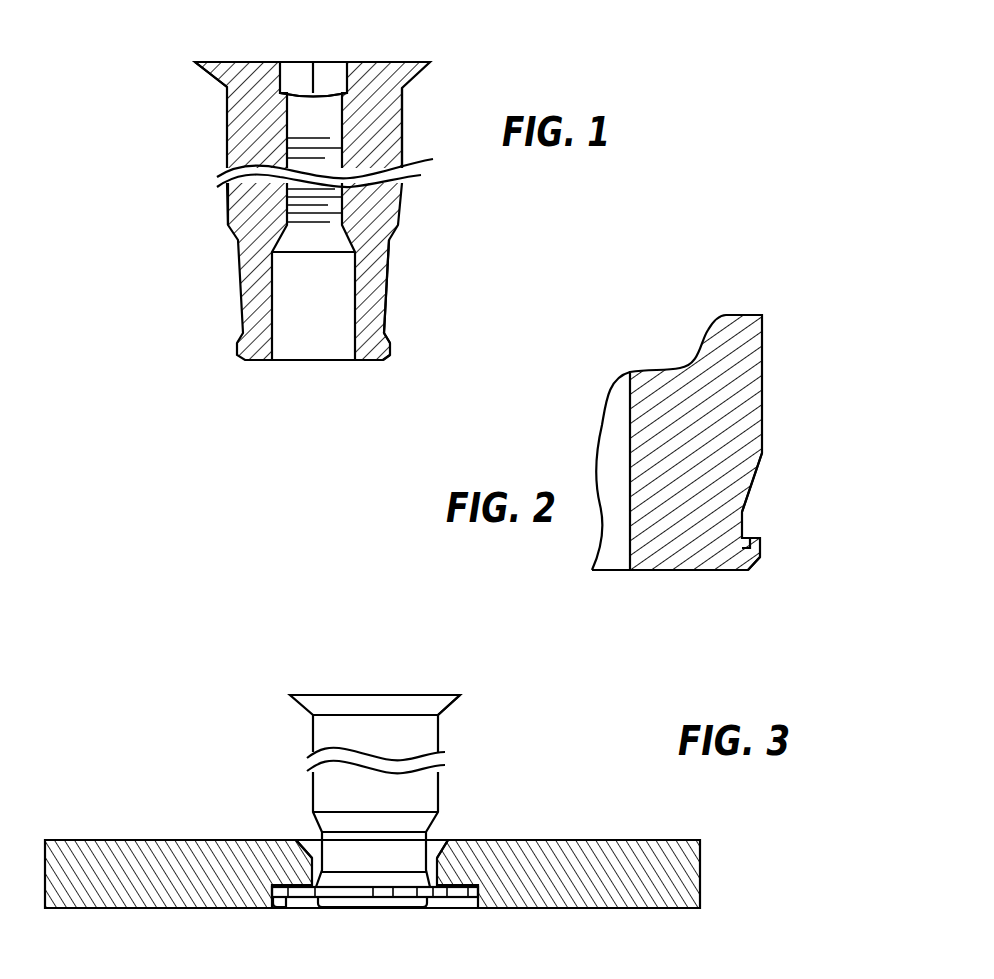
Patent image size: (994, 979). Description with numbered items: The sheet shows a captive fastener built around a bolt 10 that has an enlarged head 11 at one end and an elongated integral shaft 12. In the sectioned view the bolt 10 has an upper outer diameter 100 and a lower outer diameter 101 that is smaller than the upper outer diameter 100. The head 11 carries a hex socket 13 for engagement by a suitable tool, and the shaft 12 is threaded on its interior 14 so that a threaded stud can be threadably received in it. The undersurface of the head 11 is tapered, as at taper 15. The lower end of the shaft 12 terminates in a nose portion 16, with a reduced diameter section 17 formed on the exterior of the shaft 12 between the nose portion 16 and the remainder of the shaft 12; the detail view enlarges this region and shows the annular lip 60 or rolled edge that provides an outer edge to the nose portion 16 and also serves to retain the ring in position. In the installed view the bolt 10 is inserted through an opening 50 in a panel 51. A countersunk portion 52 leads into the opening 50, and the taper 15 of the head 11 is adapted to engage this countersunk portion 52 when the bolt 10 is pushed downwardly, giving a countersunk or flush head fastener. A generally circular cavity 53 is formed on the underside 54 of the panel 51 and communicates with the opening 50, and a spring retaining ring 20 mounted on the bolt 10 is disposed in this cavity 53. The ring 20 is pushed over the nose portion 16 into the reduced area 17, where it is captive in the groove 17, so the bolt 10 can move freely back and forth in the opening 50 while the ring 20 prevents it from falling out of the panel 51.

In FIG. 1, the bolt 10 is at (448, 237).
In FIG. 3, the bolt 10 is at (225, 726).
In FIG. 1, the enlarged head 11 is at (407, 66).
In FIG. 3, the enlarged head 11 is at (337, 693).
In FIG. 1, the elongated integral shaft 12 is at (214, 203).
In FIG. 1, the hex socket 13 is at (298, 62).
In FIG. 1, the threaded interior 14 is at (296, 212).
In FIG. 1, the taper 15 is at (213, 75).
In FIG. 3, the taper 15 is at (443, 700).
In FIG. 1, the nose portion 16 is at (387, 359).
In FIG. 2, the nose portion 16 is at (757, 563).
In FIG. 1, the reduced diameter section 17 is at (385, 342).
In FIG. 2, the reduced diameter section 17 is at (748, 520).
In FIG. 1, the upper outer diameter 100 is at (404, 156).
In FIG. 1, the lower outer diameter 101 is at (390, 287).
In FIG. 2, the annular lip 60 is at (760, 540).
In FIG. 3, the spring retaining ring 20 is at (445, 897).
In FIG. 3, the opening 50 is at (318, 878).
In FIG. 3, the panel 51 is at (640, 890).
In FIG. 3, the countersunk portion 52 is at (440, 838).
In FIG. 3, the generally circular cavity 53 is at (283, 900).
In FIG. 3, the underside 54 is at (165, 908).